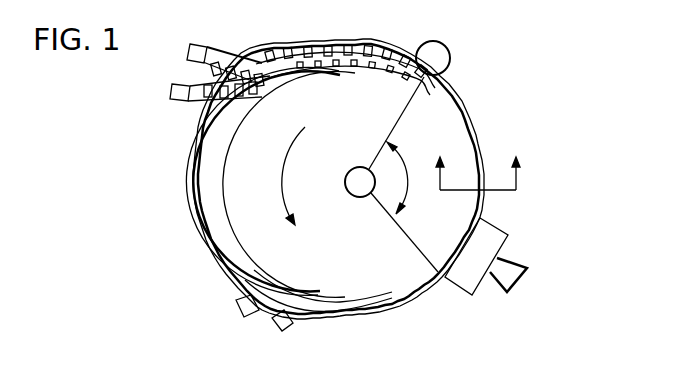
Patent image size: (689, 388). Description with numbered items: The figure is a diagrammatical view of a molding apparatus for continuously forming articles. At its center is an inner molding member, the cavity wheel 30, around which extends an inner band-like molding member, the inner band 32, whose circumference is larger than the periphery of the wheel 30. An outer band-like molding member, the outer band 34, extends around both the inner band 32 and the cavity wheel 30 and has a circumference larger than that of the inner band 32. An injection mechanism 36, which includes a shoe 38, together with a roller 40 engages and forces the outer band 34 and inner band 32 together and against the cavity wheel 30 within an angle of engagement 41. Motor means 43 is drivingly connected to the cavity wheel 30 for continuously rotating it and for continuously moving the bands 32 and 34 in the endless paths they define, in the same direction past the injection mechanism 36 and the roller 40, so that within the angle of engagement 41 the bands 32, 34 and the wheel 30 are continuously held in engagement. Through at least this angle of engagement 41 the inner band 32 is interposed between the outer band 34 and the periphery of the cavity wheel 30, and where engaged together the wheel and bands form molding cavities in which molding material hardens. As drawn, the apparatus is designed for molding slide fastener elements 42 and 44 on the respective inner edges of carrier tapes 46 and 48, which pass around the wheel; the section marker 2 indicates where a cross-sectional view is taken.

The section line 2- 2 is at (479, 159).
The cavity wheel 30 is at (253, 180).
The inner band 32 is at (228, 213).
The outer band 34 is at (227, 273).
The injection mechanism 36 is at (516, 235).
The shoe 38 is at (461, 279).
The roller 40 is at (438, 62).
The angle of engagement 41 is at (408, 187).
The slide fastener elements 42 is at (215, 70).
The motor means 43 is at (358, 198).
The slide fastener elements 44 is at (200, 99).
The carrier tape 46 is at (217, 57).
The carrier tape 48 is at (192, 96).